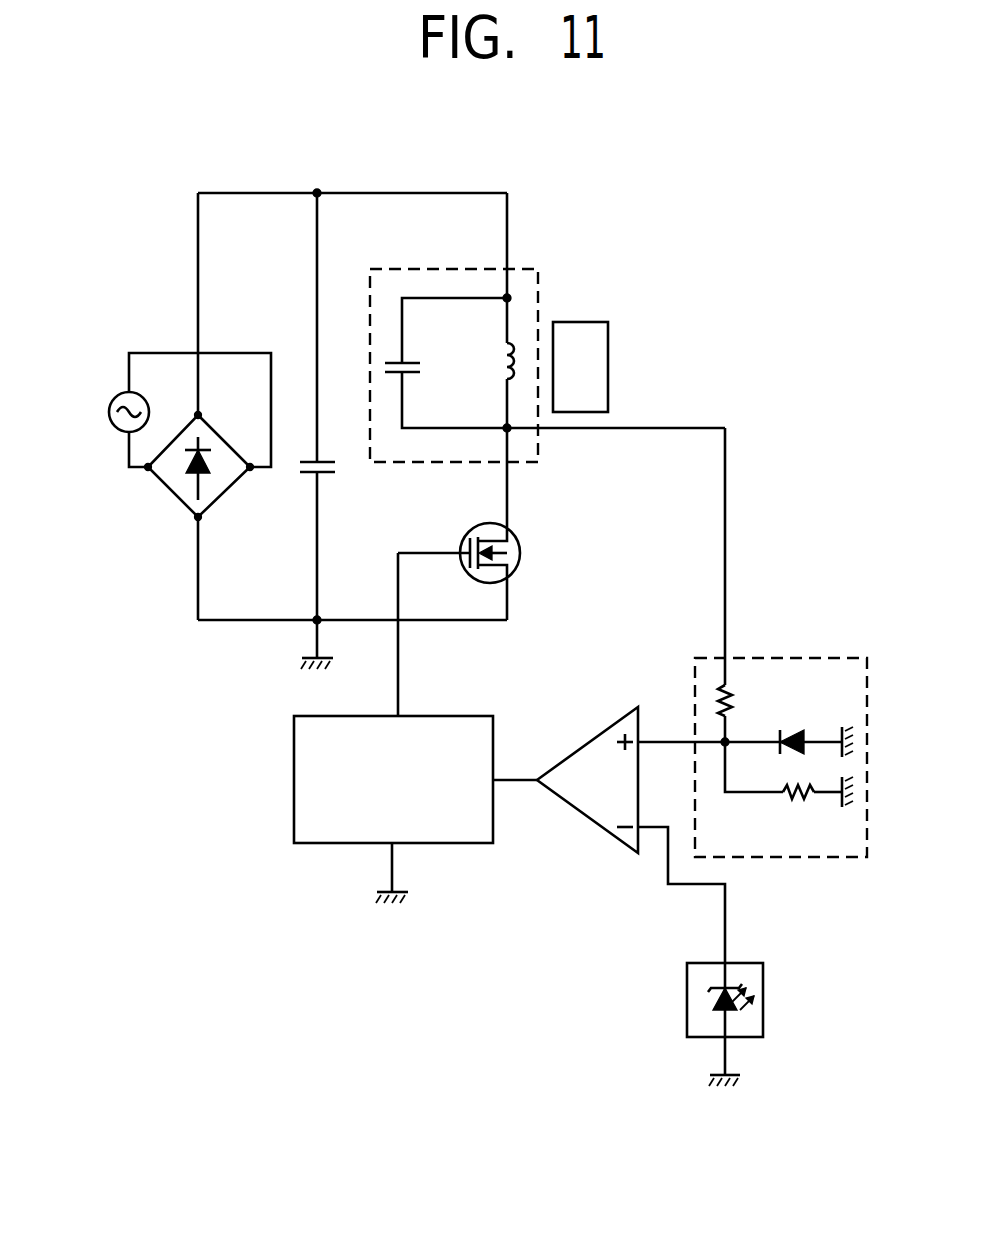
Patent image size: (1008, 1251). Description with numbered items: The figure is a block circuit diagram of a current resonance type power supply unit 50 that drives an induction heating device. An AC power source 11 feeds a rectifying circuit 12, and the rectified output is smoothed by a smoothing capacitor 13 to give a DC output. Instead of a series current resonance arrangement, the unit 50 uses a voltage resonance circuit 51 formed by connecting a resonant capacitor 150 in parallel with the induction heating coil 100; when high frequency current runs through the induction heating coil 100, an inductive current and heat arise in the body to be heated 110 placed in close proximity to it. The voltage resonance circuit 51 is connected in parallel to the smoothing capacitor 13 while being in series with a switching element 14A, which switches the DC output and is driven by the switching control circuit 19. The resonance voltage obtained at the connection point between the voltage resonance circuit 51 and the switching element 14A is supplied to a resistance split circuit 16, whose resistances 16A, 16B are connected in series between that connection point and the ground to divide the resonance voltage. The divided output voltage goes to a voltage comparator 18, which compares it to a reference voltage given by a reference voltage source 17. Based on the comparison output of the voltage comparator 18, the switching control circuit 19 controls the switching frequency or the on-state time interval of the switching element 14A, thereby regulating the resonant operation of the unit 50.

The AC power source 11 is at (112, 396).
The rectifying circuit 12 is at (178, 502).
The smoothing capacitor 13 is at (300, 472).
The voltage resonance circuit 51 is at (415, 267).
The resonance capacitor 150 is at (421, 368).
The induction heating coil 100 is at (498, 357).
The body to be heated 110 is at (590, 320).
The switching element 14A is at (515, 536).
The switching control circuit 19 is at (294, 752).
The voltage comparator 18 is at (584, 822).
The resistance split circuit 16 is at (823, 655).
The resistance 16A is at (736, 694).
The resistance 16B is at (790, 806).
The reference voltage source 17 is at (763, 990).
The current resonance type power supply unit 50 is at (170, 949).